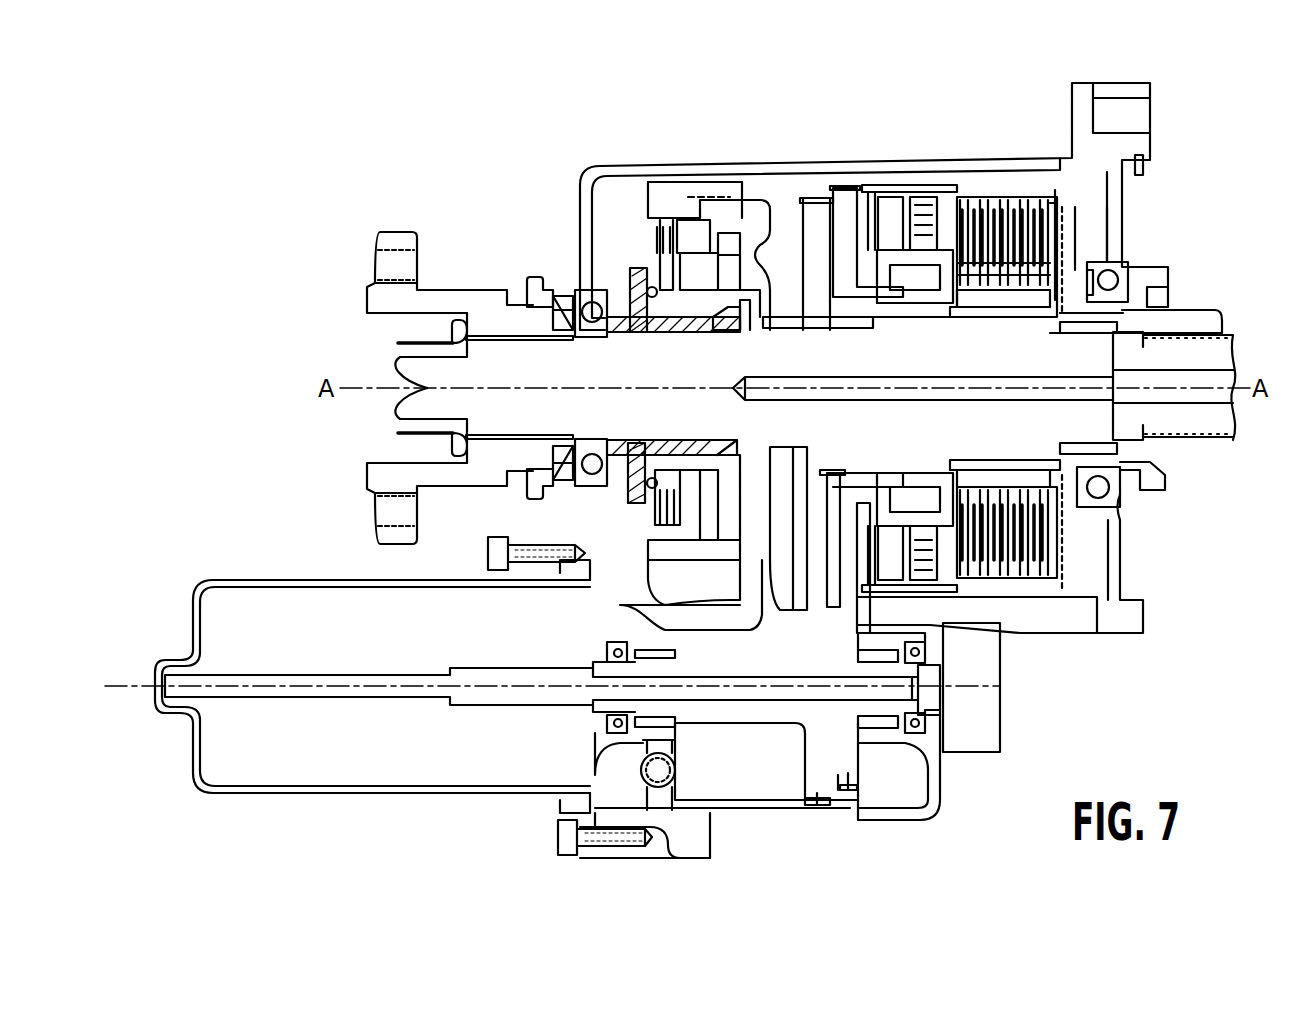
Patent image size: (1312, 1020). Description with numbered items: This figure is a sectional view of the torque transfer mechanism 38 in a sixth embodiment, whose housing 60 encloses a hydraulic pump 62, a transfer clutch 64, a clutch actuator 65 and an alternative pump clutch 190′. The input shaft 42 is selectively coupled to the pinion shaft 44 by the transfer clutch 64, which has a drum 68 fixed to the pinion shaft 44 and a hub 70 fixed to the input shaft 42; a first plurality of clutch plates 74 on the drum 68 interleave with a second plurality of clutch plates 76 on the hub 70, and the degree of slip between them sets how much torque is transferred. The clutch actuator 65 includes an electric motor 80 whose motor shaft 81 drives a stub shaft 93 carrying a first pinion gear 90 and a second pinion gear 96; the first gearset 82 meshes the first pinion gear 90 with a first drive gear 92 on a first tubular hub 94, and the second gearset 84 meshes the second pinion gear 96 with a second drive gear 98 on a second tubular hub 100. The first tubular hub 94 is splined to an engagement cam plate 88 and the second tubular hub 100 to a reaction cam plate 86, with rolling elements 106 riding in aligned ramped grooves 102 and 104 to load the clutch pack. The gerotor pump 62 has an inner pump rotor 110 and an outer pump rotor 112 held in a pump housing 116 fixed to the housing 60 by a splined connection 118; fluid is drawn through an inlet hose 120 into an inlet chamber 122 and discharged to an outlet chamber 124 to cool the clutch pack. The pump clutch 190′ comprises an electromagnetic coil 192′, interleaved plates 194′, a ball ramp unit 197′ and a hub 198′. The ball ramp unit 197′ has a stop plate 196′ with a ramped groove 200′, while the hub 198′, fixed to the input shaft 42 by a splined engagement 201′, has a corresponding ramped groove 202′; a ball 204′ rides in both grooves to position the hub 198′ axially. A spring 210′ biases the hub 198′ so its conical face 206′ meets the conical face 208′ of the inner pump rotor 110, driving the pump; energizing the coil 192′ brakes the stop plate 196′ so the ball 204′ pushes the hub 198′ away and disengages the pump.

The torque transfer mechanism 38 is at (1137, 692).
The input shaft 42 is at (400, 362).
The pinion shaft 44 is at (1235, 347).
The housing 60 is at (1072, 157).
The hydraulic pump 62 is at (742, 242).
The transfer clutch 64 is at (972, 215).
The clutch actuator 65 is at (690, 778).
The drum 68 is at (1073, 208).
The hub 70 is at (1060, 485).
The first plurality of clutch plates 74 is at (1037, 193).
The second plurality of clutch plates 76 is at (1040, 500).
The electric motor 80 is at (400, 797).
The motor shaft 81 is at (503, 672).
The first gearset 82 is at (803, 570).
The second gearset 84 is at (857, 588).
The reaction cam plate 86 is at (930, 233).
The engagement cam plate 88 is at (992, 186).
The first pinion gear 90 is at (817, 807).
The first drive gear 92 is at (817, 259).
The stub shaft 93 is at (762, 702).
The first tubular hub 94 is at (910, 313).
The second pinion gear 96 is at (850, 792).
The second drive gear 98 is at (843, 184).
The second tubular hub 100 is at (910, 288).
The ramped grooves 102 is at (923, 227).
The ramped grooves 104 is at (1005, 210).
The rolling elements 106 is at (937, 230).
The inner pump rotor 110 is at (730, 297).
The outer pump rotor 112 is at (727, 240).
The pump housing 116 is at (773, 460).
The splined connection 118 is at (723, 188).
The inlet hose 120 is at (682, 618).
The inlet chamber 122 is at (770, 497).
The outlet chamber 124 is at (740, 287).
The pump clutch 190′ is at (626, 216).
The electromagnetic coil 192′ is at (697, 192).
The interleaved plates 194′ is at (658, 243).
The stop plate 196′ is at (660, 265).
The ball ramp unit 197′ is at (634, 510).
The hub 198′ is at (650, 312).
The ramped groove 200′ is at (650, 318).
The splined engagement 201′ is at (647, 437).
The ramped groove 202′ is at (573, 285).
The ball 204′ is at (627, 307).
The conical face 206′ is at (732, 332).
The conical face 208′ is at (730, 317).
The spring 210′ is at (560, 288).